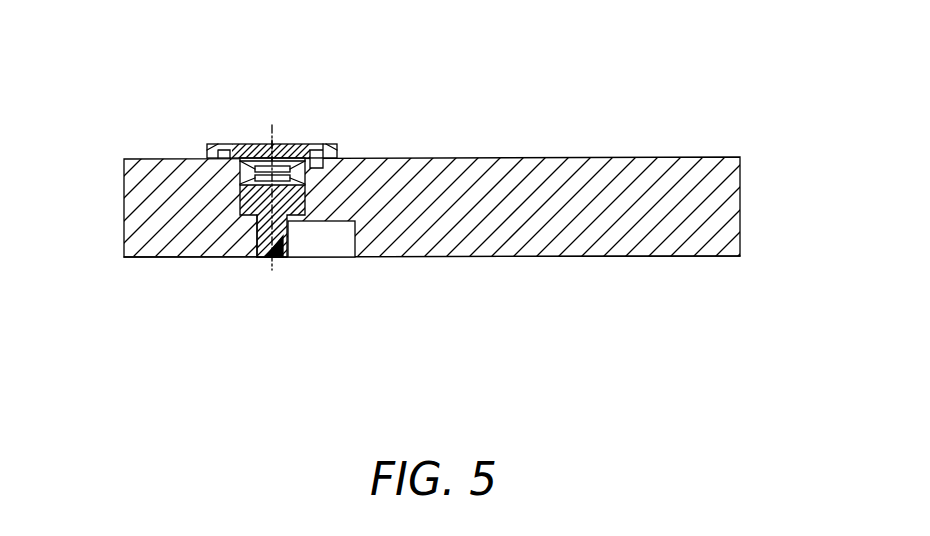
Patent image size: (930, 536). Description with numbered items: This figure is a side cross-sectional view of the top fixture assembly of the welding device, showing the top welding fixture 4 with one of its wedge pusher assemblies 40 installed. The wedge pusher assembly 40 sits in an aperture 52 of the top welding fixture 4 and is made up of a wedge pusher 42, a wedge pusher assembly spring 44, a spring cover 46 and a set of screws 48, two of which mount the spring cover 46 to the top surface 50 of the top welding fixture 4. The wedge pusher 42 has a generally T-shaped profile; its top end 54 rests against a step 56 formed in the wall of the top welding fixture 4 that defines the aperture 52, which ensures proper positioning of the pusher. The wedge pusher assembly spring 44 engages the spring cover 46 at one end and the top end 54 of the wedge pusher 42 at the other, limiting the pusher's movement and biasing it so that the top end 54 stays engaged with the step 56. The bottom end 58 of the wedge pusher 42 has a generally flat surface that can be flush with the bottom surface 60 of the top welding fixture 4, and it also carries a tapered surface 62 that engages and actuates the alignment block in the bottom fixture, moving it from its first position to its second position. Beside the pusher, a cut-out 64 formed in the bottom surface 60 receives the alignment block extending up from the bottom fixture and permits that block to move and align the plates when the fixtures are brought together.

The top welding fixture 4 is at (183, 198).
The wedge pusher assembly 40 is at (246, 104).
The wedge pusher 42 is at (237, 208).
The wedge pusher assembly spring 44 is at (267, 145).
The spring cover 46 is at (293, 145).
The screws 48 is at (227, 145).
The top surface 50 is at (579, 157).
The aperture 52 is at (252, 176).
The top end 54 is at (304, 180).
The step 56 is at (250, 215).
The bottom end 58 is at (263, 257).
The bottom surface 60 is at (563, 257).
The tapered surface 62 is at (283, 242).
The cut-out 64 is at (330, 243).